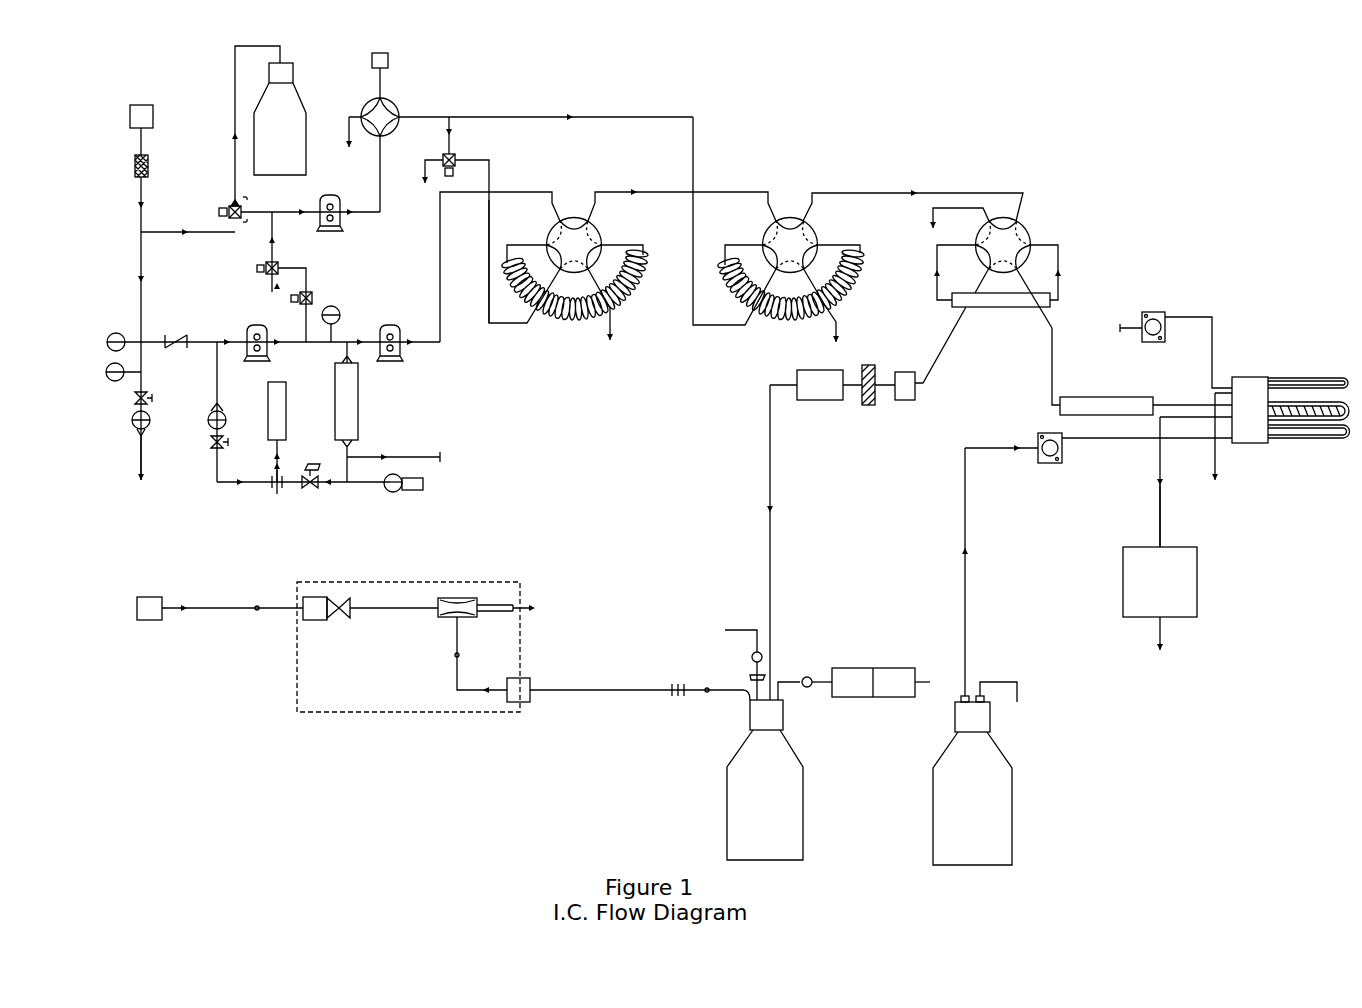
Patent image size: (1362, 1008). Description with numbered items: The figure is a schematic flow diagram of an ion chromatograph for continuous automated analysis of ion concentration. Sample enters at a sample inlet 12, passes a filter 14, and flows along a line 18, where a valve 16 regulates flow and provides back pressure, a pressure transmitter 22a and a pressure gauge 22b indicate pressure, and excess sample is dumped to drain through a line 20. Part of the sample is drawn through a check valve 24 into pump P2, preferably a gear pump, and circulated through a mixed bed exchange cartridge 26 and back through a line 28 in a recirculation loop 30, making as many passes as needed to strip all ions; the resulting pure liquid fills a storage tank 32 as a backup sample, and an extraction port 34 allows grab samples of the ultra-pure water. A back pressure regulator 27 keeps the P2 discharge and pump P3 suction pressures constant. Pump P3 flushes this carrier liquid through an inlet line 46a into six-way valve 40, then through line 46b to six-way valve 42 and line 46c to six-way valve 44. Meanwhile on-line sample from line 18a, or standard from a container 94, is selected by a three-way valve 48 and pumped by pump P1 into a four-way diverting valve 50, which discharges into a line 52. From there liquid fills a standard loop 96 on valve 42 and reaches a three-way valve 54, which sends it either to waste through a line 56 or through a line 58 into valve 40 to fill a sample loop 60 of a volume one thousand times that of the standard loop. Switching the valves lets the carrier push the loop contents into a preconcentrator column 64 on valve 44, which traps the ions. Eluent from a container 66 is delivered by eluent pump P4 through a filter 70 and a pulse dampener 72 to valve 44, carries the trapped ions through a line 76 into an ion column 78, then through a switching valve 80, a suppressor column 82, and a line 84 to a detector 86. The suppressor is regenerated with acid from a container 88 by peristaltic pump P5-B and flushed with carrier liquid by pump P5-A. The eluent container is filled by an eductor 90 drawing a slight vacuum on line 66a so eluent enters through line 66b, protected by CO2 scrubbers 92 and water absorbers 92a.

The sample inlet 12 is at (156, 117).
The filter 14 is at (156, 166).
The valve 16 is at (153, 417).
The line 18 is at (145, 268).
The line 18a is at (200, 235).
The line 20 is at (145, 457).
The pressure transmitter 22a is at (270, 325).
The pressure gauge 22b is at (140, 368).
The check valve 24 is at (178, 333).
The mixed bed exchange cartridge 26 is at (360, 420).
The back pressure regulator 27 is at (277, 263).
The line 28 is at (225, 485).
The recirculation loop 30 is at (220, 385).
The storage tank 32 is at (287, 387).
The extraction port 34 is at (415, 492).
The six-way valve 40 is at (577, 208).
The six-way valve 42 is at (795, 212).
The six-way valve 44 is at (1033, 230).
The inlet line 46a is at (437, 252).
The line 46b is at (743, 190).
The line 46c is at (935, 190).
The three-way valve 48 is at (225, 208).
The diverting valve 50 is at (398, 103).
The line 52 is at (637, 110).
The three-way valve 54 is at (458, 157).
The line 56 is at (425, 163).
The line 58 is at (489, 266).
The sample loop 60 is at (578, 322).
The preconcentrator column 64 is at (992, 310).
The container 66 is at (810, 770).
The line 66a is at (588, 683).
The line 66b is at (737, 623).
The filter 70 is at (866, 407).
The pulse dampener 72 is at (905, 402).
The line 76 is at (1060, 325).
The ion column 78 is at (1101, 393).
The switching valve 80 is at (1245, 368).
The suppressor column 82 is at (1322, 368).
The line 84 is at (1153, 515).
The detector 86 is at (1203, 580).
The container 88 is at (1020, 763).
The eductor 90 is at (458, 595).
The CO2 scrubbers 92 is at (845, 662).
The water absorbers 92a is at (903, 662).
The container 94 is at (298, 92).
The standard loop 96 is at (777, 317).
The pump P1 is at (330, 195).
The pump P2 is at (248, 333).
The pump P3 is at (387, 332).
The eluent pump P4 is at (813, 403).
The pump P5-A is at (1157, 308).
The peristaltic pump P5-B is at (1050, 467).